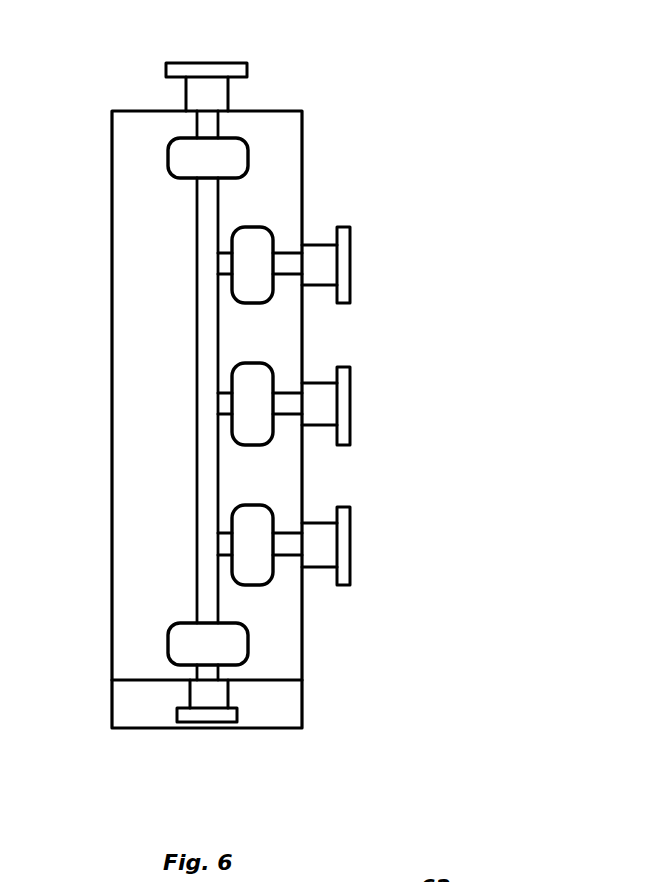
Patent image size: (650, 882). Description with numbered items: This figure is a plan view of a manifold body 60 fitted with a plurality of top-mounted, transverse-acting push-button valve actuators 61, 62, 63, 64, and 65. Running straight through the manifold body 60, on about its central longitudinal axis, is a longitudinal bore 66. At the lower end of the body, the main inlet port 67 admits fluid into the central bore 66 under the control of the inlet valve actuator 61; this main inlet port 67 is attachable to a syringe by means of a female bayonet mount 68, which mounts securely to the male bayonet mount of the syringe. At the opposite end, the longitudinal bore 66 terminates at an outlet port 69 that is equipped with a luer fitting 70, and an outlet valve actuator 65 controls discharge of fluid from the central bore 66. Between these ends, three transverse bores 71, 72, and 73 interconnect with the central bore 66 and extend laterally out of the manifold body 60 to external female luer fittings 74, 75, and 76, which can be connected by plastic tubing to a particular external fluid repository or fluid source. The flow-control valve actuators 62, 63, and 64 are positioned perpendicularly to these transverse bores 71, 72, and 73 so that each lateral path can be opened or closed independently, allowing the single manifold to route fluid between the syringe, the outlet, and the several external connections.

The manifold body 60 is at (302, 663).
The inlet valve actuator 61 is at (168, 648).
The flow-control valve actuator 62 is at (273, 512).
The flow-control valve actuator 63 is at (273, 370).
The flow-control valve actuator 64 is at (258, 227).
The outlet valve actuator 65 is at (249, 150).
The longitudinal bore 66 is at (197, 443).
The main inlet port 67 is at (222, 722).
The female bayonet mount 68 is at (278, 713).
The outlet port 69 is at (196, 63).
The luer fitting 70 is at (186, 90).
The transverse bore 71 is at (285, 558).
The transverse bore 72 is at (284, 414).
The transverse bore 73 is at (285, 253).
The external female luer fitting 74 is at (350, 582).
The external female luer fitting 75 is at (350, 426).
The external female luer fitting 76 is at (350, 293).